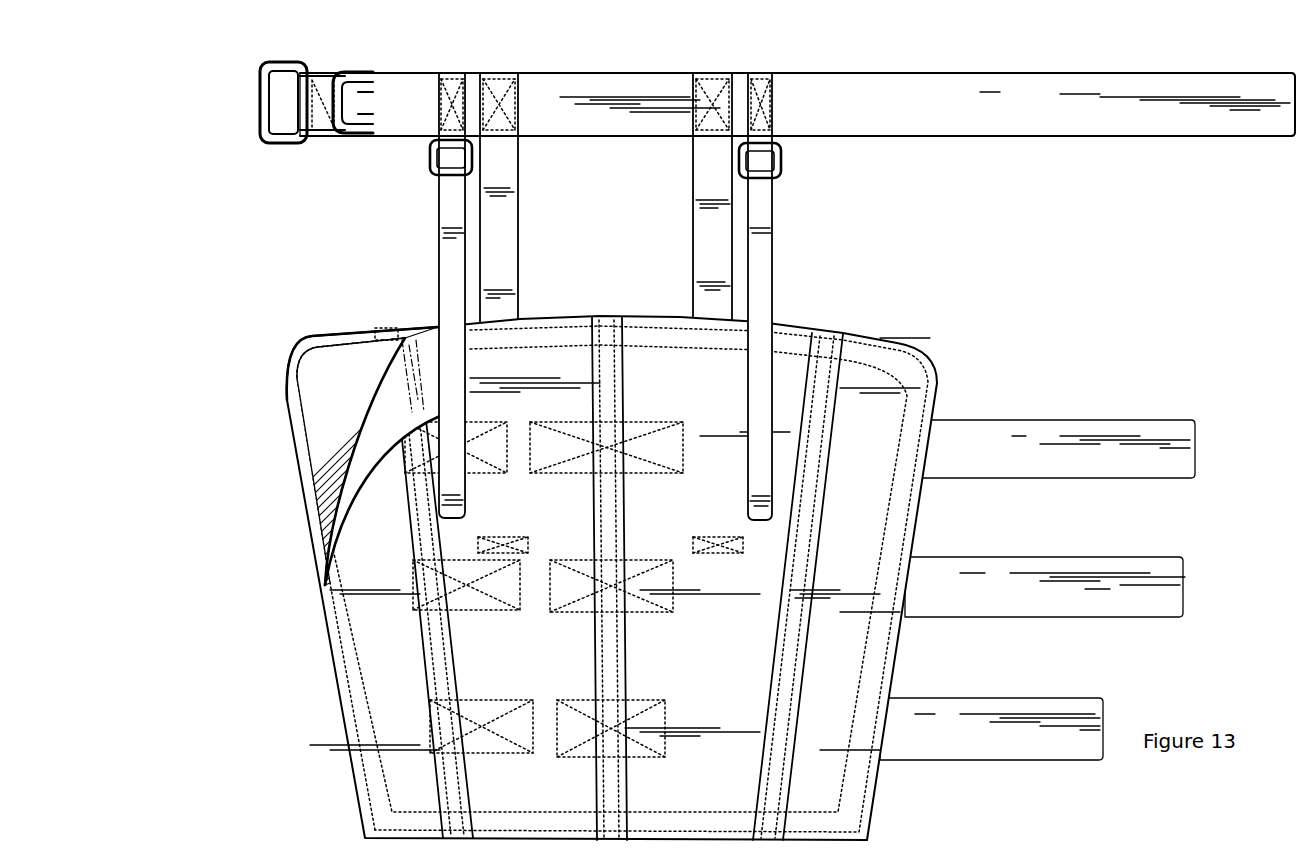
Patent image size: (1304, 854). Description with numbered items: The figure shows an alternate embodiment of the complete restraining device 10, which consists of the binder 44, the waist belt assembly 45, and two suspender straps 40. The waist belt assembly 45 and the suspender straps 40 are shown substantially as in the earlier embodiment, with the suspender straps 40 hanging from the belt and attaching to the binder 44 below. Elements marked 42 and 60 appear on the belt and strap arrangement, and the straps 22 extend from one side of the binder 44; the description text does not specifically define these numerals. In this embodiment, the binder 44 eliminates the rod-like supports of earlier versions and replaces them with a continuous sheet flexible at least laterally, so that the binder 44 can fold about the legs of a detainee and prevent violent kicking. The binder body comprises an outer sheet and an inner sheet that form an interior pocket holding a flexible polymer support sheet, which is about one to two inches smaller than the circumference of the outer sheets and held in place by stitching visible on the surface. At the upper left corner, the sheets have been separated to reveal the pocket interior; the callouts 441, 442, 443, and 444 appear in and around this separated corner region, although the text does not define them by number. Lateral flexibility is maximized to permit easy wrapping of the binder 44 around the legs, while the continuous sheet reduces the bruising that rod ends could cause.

The restraining device 10 is at (1034, 356).
The attachment straps 22 is at (982, 475).
The suspender straps 40 is at (500, 228).
The strap stitching to belt 42 is at (520, 74).
The binder 44 is at (350, 792).
The waist belt assembly 45 is at (814, 68).
The adjustable narrow straps with slide buckles 60 is at (450, 253).
The strap beneath flap 441 is at (402, 352).
The corner flap 442 is at (402, 433).
The hook fastener patch 443 is at (331, 352).
The edge binding stitch lines 444 is at (352, 668).